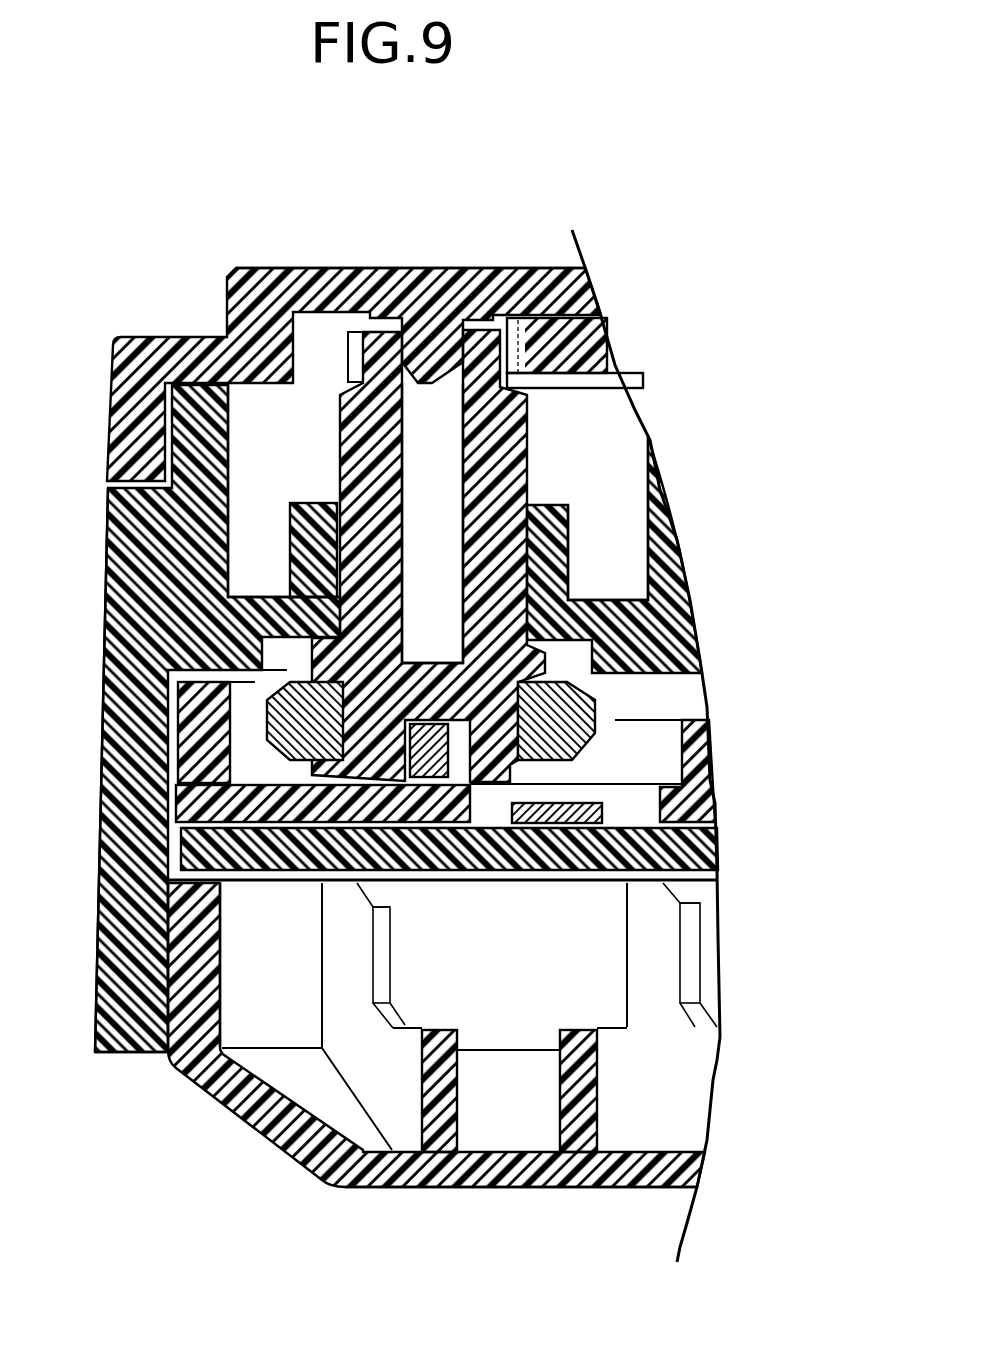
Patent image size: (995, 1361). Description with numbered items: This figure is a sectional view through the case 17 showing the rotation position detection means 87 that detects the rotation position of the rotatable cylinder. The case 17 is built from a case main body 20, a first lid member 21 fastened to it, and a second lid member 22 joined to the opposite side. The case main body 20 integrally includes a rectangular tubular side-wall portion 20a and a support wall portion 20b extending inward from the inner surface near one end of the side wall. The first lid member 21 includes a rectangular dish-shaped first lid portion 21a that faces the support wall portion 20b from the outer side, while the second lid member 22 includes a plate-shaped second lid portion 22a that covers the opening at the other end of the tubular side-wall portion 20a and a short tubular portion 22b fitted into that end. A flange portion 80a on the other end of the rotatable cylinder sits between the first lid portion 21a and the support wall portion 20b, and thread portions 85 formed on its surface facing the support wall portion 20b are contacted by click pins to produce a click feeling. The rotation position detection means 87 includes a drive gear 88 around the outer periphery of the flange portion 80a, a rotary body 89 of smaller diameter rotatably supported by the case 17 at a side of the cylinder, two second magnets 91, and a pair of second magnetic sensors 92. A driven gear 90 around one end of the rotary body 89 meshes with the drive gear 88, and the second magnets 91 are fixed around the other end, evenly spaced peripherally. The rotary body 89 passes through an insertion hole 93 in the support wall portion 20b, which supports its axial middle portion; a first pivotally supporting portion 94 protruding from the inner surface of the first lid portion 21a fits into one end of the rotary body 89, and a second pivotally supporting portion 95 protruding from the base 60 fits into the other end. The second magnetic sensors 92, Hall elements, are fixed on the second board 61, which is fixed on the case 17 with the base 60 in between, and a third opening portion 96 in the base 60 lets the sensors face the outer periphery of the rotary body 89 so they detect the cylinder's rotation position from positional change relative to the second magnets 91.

The case 17 is at (132, 1058).
The case main body 20 is at (97, 576).
The tubular side-wall portion 20a is at (117, 660).
The support wall portion 20b is at (611, 610).
The first lid member 21 is at (428, 255).
The first lid portion 21a is at (350, 266).
The second lid member 22 is at (484, 1190).
The second lid portion 22a is at (537, 1182).
The short tubular portion 22b is at (178, 982).
The base 60 is at (177, 799).
The second board 61 is at (597, 847).
The flange portion 80a is at (603, 347).
The thread portions 85 is at (593, 389).
The rotation position detection means 87 is at (325, 375).
The drive gear 88 is at (519, 323).
The rotary body 89 is at (347, 430).
The driven gear 90 is at (351, 345).
The second magnets 91 is at (278, 721).
The second magnetic sensors 92 is at (548, 820).
The insertion hole 93 is at (348, 520).
The first pivotally supporting portion 94 is at (437, 366).
The second pivotally supporting portion 95 is at (432, 735).
The third opening portion 96 is at (660, 800).